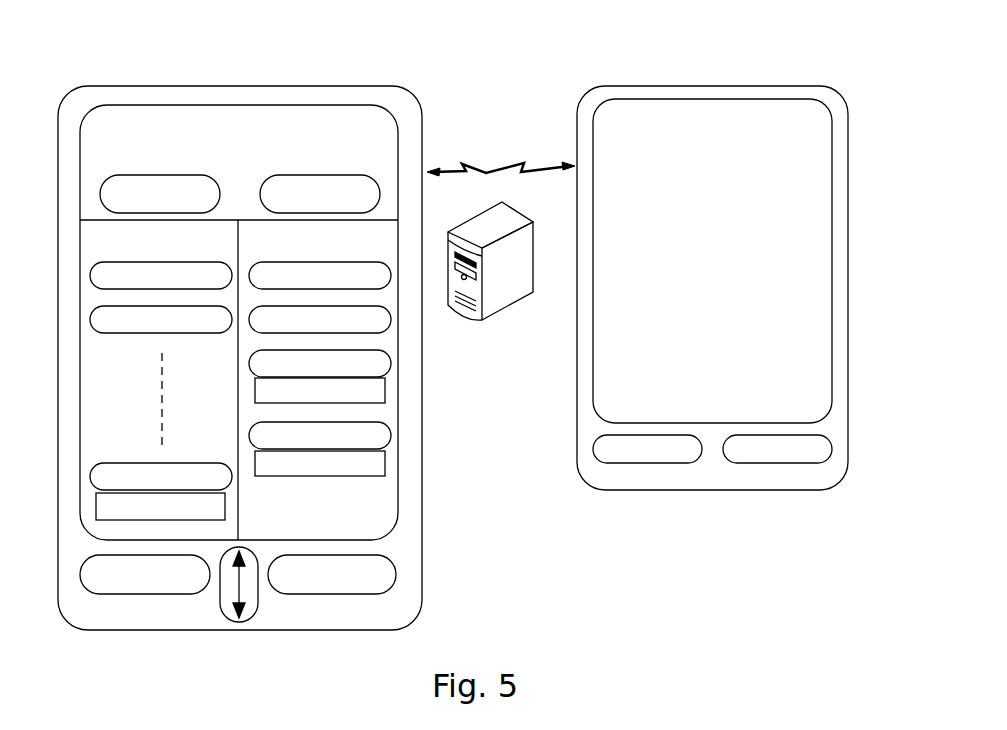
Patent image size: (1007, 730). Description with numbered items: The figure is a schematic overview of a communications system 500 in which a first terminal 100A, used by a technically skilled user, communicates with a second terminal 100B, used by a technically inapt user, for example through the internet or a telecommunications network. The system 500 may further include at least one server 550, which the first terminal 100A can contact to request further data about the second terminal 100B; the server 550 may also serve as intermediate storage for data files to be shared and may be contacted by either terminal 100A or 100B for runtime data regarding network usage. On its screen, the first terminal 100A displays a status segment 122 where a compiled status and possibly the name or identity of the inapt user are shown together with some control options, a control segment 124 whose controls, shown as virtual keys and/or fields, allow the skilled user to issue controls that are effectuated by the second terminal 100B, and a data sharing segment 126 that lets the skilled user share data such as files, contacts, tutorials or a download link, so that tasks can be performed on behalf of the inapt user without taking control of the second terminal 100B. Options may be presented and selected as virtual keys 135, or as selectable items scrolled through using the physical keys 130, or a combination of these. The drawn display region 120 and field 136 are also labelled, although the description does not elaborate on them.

The first terminal 100A is at (118, 85).
The second terminal 100B is at (695, 85).
The display screen 120 is at (288, 105).
The status segment 122 is at (355, 143).
The control segment 124 is at (90, 507).
The data sharing segment 126 is at (360, 435).
The physical keys 130 is at (239, 622).
The virtual keys 135 is at (372, 433).
The share input field 136 is at (362, 475).
The communications system 500 is at (616, 574).
The server 550 is at (482, 320).